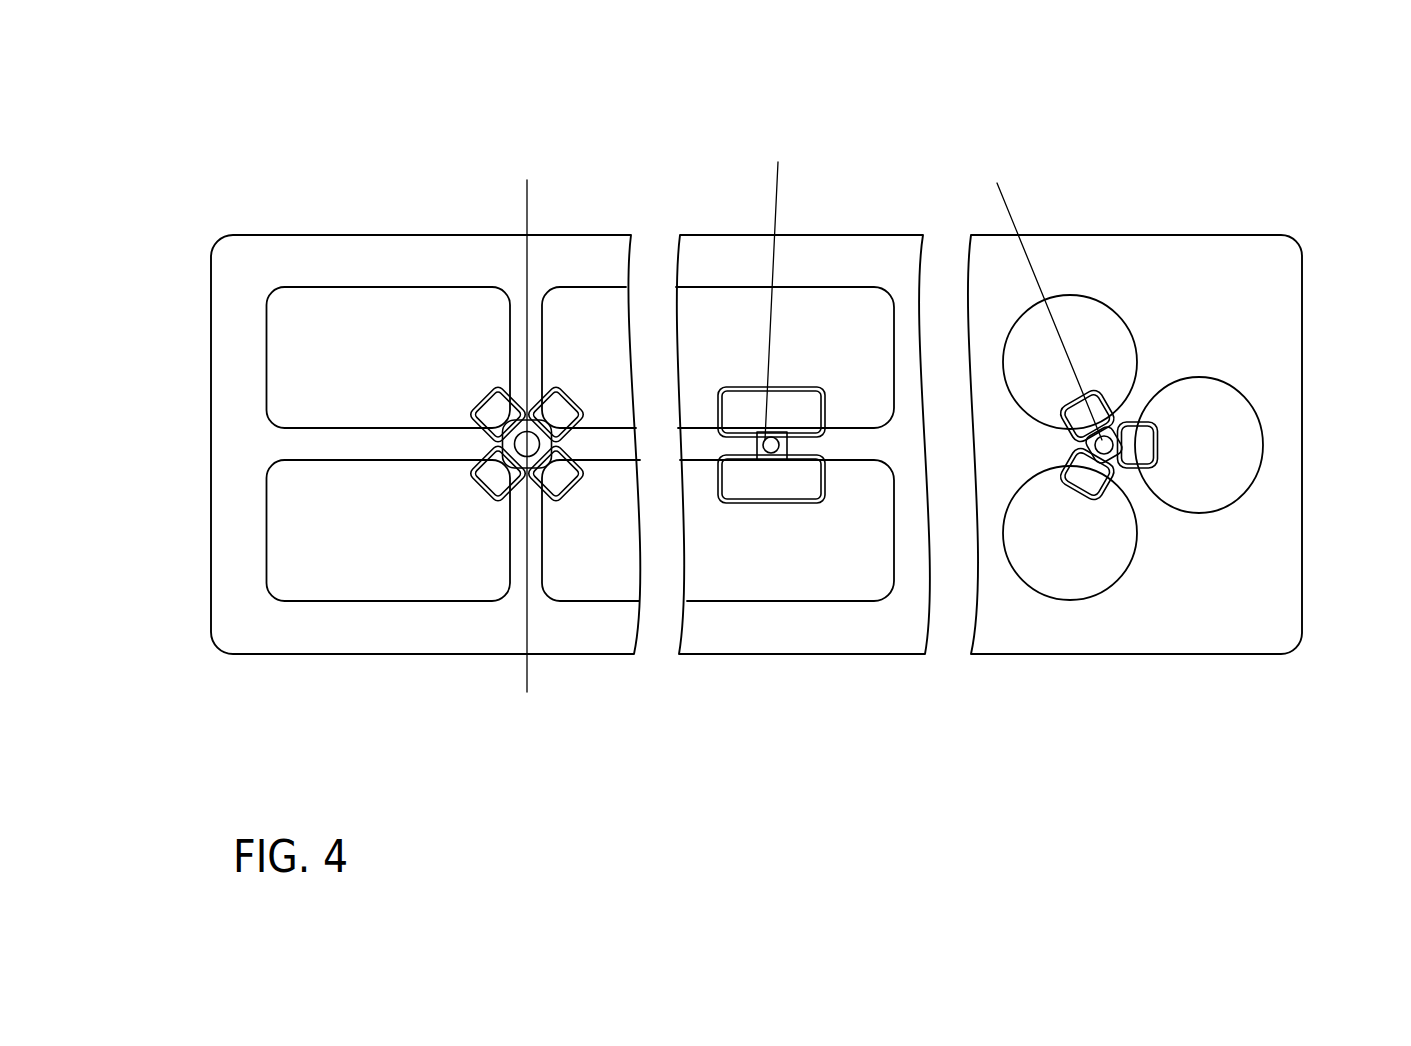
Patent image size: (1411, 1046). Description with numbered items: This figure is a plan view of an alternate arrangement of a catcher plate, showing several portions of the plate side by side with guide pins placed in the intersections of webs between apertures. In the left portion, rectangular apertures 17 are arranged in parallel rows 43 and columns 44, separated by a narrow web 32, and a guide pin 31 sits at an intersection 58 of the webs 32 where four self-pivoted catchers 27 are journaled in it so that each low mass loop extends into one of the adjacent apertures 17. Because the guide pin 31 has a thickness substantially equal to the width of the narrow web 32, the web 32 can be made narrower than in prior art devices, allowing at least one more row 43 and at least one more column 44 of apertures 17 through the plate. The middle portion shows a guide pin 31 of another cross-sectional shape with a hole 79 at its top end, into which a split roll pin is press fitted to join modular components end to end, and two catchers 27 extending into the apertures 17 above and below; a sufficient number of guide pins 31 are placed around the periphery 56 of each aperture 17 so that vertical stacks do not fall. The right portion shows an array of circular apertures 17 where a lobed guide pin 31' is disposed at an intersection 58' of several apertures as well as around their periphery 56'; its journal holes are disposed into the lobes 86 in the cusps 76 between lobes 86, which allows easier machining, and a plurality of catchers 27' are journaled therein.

The column 44 is at (362, 196).
The row 43 is at (172, 378).
The narrow web 32 is at (300, 443).
The guide pin 31 is at (653, 413).
The intersection 58 is at (580, 448).
The self-pivoted catcher 27 is at (547, 442).
The hole 79 is at (773, 442).
The periphery 56 is at (785, 522).
The aperture 17 is at (1023, 503).
The cusp 76 is at (1068, 447).
The lobe 86 is at (1117, 447).
The lobed guide pin 31' is at (1036, 299).
The intersection 58' is at (1171, 441).
The catcher 27' is at (1161, 557).
The periphery 56' is at (1250, 427).